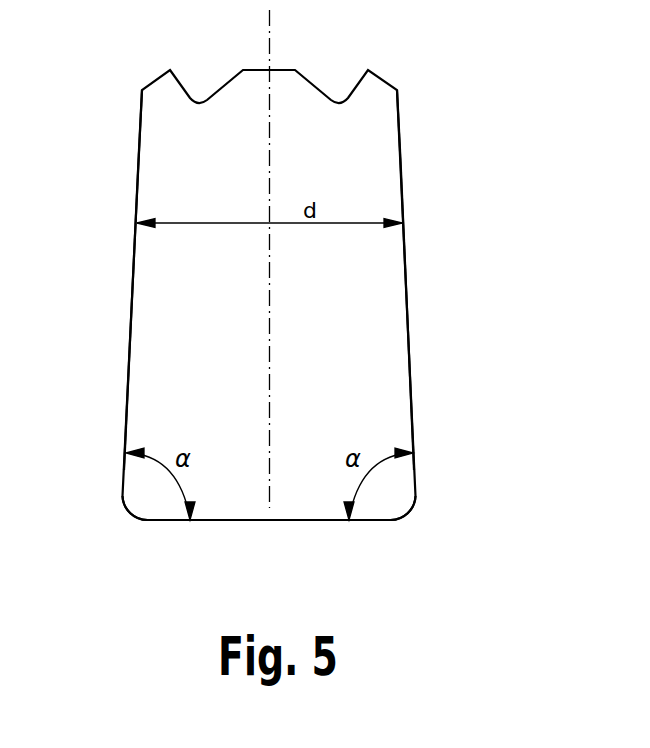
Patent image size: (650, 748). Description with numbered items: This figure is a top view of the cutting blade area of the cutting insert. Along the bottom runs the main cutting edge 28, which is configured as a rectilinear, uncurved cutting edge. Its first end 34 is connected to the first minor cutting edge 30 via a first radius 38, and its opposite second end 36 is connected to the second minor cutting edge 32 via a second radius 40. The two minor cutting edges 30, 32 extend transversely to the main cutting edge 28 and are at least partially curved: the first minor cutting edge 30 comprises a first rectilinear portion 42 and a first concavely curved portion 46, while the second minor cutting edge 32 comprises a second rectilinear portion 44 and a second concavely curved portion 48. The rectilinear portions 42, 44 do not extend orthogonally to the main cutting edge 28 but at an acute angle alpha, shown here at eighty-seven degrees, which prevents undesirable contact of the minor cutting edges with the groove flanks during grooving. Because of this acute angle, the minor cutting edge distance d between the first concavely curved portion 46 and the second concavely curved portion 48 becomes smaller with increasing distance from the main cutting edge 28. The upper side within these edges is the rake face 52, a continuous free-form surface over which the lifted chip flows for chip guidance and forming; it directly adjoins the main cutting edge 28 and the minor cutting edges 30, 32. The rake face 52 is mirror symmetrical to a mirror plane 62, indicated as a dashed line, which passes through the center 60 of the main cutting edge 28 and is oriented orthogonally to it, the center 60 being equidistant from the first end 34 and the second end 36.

The main cutting edge 28 is at (221, 522).
The first minor cutting edge 30 is at (408, 298).
The second minor cutting edge 32 is at (132, 298).
The first end of the main cutting edge 34 is at (389, 522).
The second end of the main cutting edge 36 is at (153, 522).
The first radius 38 is at (416, 508).
The second radius 40 is at (121, 508).
The first rectilinear portion 42 is at (413, 418).
The second rectilinear portion 44 is at (125, 418).
The first concavely curved portion 46 is at (402, 183).
The second concavely curved portion 48 is at (137, 183).
The rake face 52 is at (199, 272).
The center of the main cutting edge 60 is at (270, 522).
The mirror plane 62 is at (271, 30).